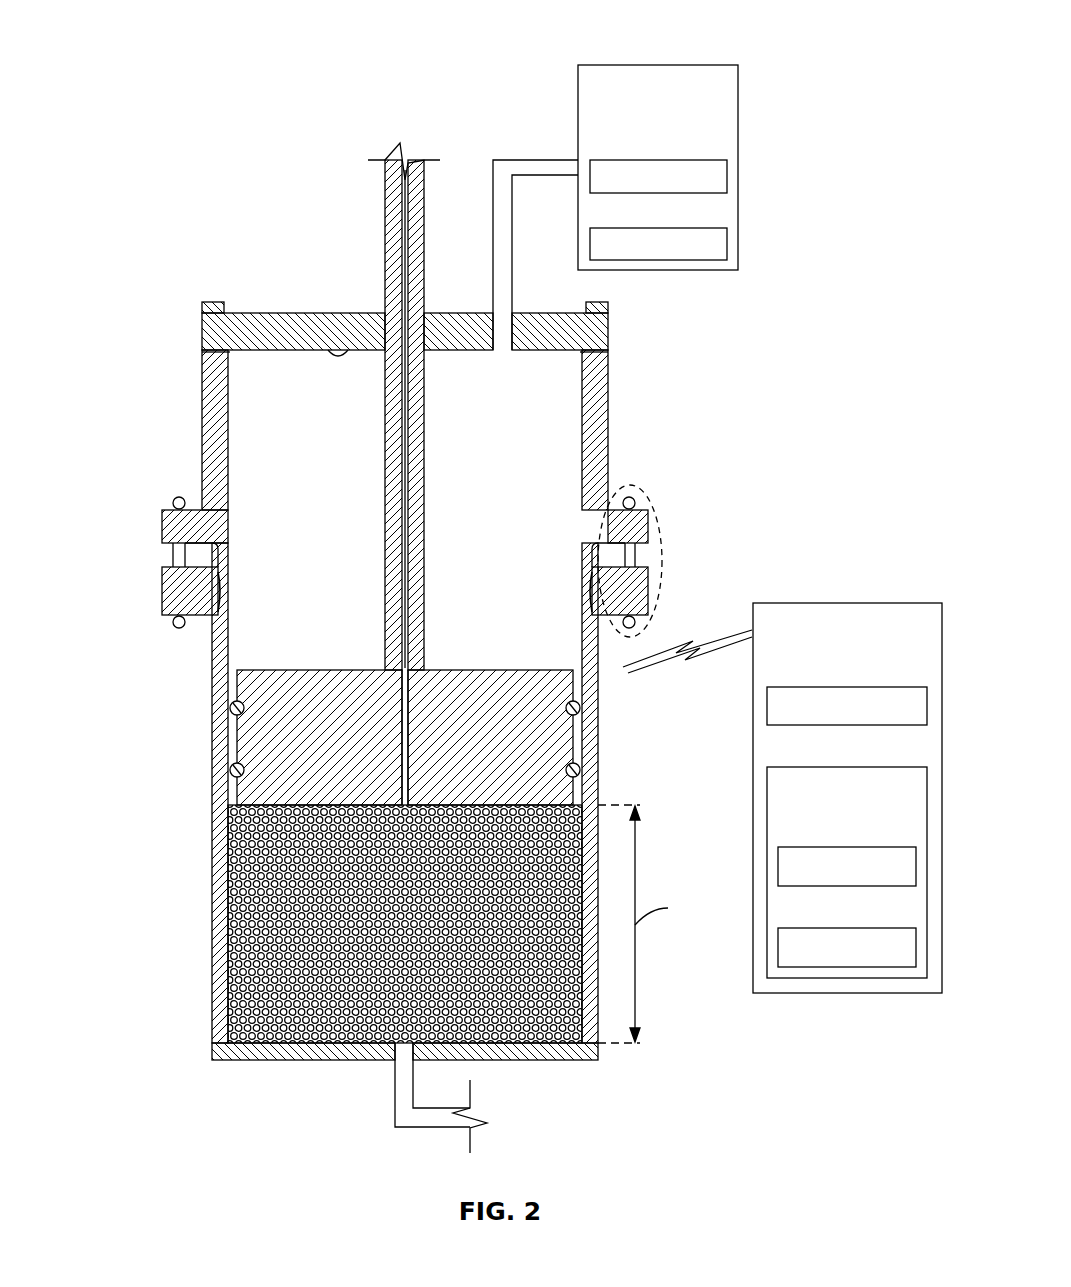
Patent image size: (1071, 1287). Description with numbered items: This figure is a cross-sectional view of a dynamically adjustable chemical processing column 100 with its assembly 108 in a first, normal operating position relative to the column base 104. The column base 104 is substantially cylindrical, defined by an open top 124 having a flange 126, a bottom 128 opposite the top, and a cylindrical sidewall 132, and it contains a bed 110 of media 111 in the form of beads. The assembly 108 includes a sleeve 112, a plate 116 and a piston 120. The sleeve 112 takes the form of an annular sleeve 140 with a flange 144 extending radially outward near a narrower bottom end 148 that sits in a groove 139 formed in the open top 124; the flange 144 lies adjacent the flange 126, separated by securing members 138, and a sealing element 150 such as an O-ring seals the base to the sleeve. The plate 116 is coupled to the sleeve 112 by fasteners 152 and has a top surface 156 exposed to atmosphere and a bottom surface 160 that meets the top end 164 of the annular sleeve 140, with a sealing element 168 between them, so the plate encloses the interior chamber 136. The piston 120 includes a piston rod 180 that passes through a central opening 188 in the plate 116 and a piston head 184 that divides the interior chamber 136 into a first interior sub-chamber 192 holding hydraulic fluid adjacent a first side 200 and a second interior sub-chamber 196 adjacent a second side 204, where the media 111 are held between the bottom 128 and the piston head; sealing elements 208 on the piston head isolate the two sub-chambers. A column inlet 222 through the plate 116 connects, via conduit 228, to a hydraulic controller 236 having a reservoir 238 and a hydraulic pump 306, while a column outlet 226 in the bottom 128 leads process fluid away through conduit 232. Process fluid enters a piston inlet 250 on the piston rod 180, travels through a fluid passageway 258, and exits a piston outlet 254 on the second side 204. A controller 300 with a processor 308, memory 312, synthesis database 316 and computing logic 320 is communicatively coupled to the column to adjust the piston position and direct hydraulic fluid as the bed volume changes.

The chemical processing column 100 is at (136, 54).
The column base 104 is at (410, 1074).
The assembly 108 is at (178, 398).
The bed 110 is at (360, 924).
The media 111 is at (235, 835).
The sleeve 112 is at (141, 696).
The plate 116 is at (405, 274).
The piston 120 is at (401, 687).
The open top 124 is at (170, 572).
The flange 126 is at (160, 590).
The bottom 128 is at (275, 1060).
The cylindrical sidewall 132 is at (598, 738).
The interior chamber 136 is at (504, 445).
The securing members 138 is at (165, 497).
The groove 139 is at (215, 610).
The annular sleeve 140 is at (202, 445).
The flange 144 is at (163, 522).
The bottom end 148 is at (222, 615).
The sealing element 150 is at (216, 575).
The fasteners 152 is at (212, 302).
The top surface 156 is at (281, 313).
The bottom surface 160 is at (345, 350).
The top end 164 is at (205, 349).
The sealing element 168 is at (637, 347).
The piston rod 180 is at (390, 388).
The piston head 184 is at (401, 687).
The central opening 188 is at (406, 172).
The first interior sub-chamber 192 is at (504, 445).
The second interior sub-chamber 196 is at (360, 924).
The first side 200 is at (262, 695).
The second side 204 is at (360, 924).
The sealing elements 208 is at (237, 708).
The column inlet 222 is at (556, 160).
The column outlet 226 is at (409, 1103).
The conduit 228 is at (532, 238).
The conduit 232 is at (395, 1048).
The hydraulic controller 236 is at (646, 65).
The reservoir 238 is at (656, 228).
The piston inlet 250 is at (390, 388).
The piston outlet 254 is at (415, 812).
The fluid passageway 258 is at (408, 570).
The controller 300 is at (820, 603).
The hydraulic pump 306 is at (656, 160).
The processor 308 is at (822, 687).
The memory 312 is at (822, 767).
The synthesis database 316 is at (836, 847).
The computing logic 320 is at (836, 928).